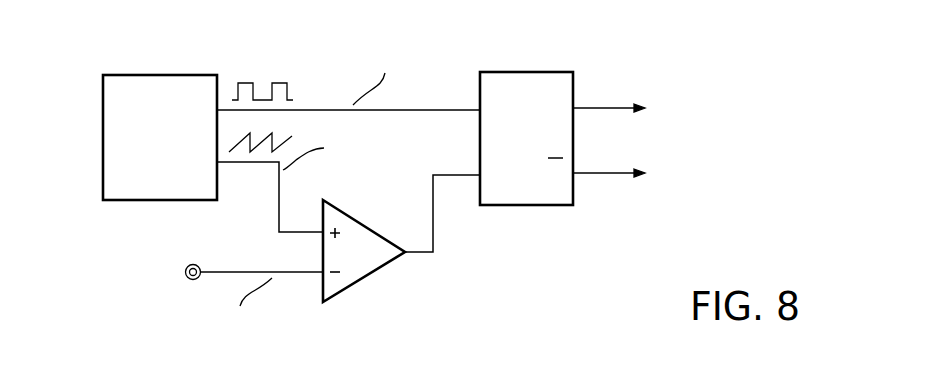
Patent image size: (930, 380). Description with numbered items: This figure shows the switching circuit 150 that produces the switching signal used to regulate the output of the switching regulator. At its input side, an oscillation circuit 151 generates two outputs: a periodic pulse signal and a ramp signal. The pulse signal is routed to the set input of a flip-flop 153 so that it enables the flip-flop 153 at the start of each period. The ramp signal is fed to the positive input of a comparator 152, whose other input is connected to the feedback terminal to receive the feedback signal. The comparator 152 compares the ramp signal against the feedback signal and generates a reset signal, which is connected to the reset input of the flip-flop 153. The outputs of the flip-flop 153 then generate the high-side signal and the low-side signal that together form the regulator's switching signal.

The switching circuit 150 is at (701, 34).
The oscillation circuit 151 is at (186, 72).
The comparator 152 is at (363, 287).
The flip-flop 153 is at (551, 69).